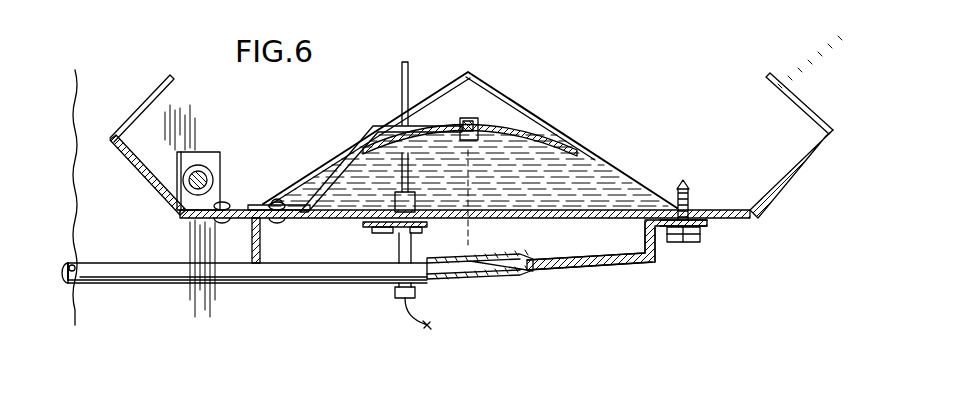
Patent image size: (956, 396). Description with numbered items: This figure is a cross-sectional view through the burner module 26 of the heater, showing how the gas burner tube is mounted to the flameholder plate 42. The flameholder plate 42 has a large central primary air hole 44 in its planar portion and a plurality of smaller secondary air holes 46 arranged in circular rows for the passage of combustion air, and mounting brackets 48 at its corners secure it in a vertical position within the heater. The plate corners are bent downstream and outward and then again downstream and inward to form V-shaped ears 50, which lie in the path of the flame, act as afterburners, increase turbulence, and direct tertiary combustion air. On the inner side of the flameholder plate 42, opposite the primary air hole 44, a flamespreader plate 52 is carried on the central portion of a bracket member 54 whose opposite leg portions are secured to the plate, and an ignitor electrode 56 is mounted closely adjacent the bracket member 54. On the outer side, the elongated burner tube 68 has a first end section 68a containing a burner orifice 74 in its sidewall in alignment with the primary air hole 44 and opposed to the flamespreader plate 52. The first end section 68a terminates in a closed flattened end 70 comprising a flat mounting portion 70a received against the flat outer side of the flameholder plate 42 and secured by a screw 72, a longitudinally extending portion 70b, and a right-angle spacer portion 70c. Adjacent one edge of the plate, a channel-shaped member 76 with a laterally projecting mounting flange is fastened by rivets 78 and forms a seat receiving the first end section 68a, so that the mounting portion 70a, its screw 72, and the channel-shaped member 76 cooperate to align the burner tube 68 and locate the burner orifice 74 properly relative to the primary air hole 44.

The burner module 26 is at (737, 72).
The flameholder plate 42 is at (630, 212).
The primary air hole 44 is at (500, 207).
The secondary air holes 46 is at (347, 203).
The mounting brackets 48 is at (193, 153).
The ears 50 is at (125, 118).
The flamespreader plate 52 is at (525, 147).
The bracket member 54 is at (347, 158).
The ignitor electrode 56 is at (410, 76).
The elongated burner tube 68 is at (290, 287).
The first end section 68a is at (110, 272).
The closed flattened end 70 is at (615, 270).
The flat mounting portion 70a is at (713, 227).
The longitudinally extending portion 70b is at (570, 266).
The right-angle spacer portion 70c is at (663, 245).
The screw 72 is at (688, 243).
The burner orifice 74 is at (472, 268).
The channel-shaped member 76 is at (250, 248).
The rivets 78 is at (230, 212).